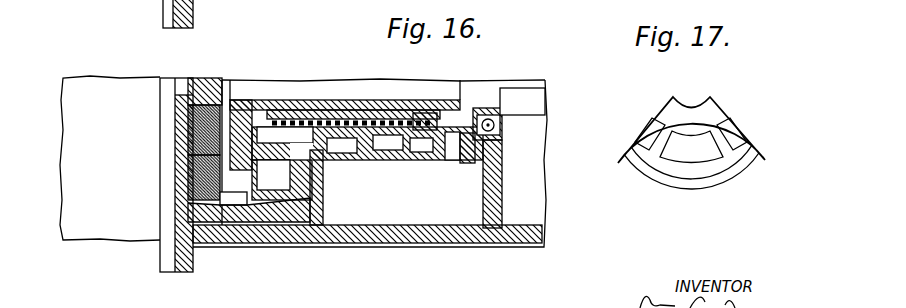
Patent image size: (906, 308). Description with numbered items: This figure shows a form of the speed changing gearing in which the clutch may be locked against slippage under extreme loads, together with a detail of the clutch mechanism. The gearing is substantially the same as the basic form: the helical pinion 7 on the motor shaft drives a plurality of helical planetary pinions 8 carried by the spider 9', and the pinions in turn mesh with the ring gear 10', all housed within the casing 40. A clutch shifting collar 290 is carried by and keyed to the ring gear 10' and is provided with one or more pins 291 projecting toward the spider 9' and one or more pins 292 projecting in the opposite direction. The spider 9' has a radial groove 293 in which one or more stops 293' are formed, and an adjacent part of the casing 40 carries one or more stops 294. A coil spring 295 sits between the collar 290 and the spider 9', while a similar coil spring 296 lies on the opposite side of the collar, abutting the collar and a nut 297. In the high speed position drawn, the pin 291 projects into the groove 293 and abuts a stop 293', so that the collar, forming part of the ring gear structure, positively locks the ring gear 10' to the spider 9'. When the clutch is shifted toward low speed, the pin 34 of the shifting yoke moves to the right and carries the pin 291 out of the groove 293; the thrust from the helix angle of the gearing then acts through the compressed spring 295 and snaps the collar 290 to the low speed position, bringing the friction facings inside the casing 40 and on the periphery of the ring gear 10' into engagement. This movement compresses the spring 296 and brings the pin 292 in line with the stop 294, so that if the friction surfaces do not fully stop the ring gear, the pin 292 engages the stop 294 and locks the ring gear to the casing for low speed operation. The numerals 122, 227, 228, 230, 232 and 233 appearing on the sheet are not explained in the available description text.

In FIG. 16, the helical pinion 7 is at (200, 78).
In FIG. 16, the helical planetary pinions 8 is at (190, 123).
In FIG. 16, the spider 9' is at (163, 181).
In FIG. 16, the ring gear 10' is at (249, 231).
In FIG. 16, the pins 34 is at (345, 160).
In FIG. 16, the casing 40 is at (367, 248).
In FIG. 17, the rim 122 is at (645, 175).
In FIG. 16, the bracket 227 is at (197, 14).
In FIG. 16, the member 228 is at (286, 0).
In FIG. 16, the member 230 is at (553, 0).
In FIG. 16, the member 232 is at (316, 0).
In FIG. 16, the member 233 is at (292, 0).
In FIG. 16, the clutch shifting collar 290 is at (363, 100).
In FIG. 16, the pin 291 is at (320, 168).
In FIG. 16, the pin 292 is at (434, 153).
In FIG. 16, the radial groove 293 is at (215, 78).
In FIG. 17, the radial groove 293 is at (704, 179).
In FIG. 17, the stop 293' is at (713, 125).
In FIG. 16, the stop 294 is at (458, 108).
In FIG. 16, the coil spring 295 is at (313, 100).
In FIG. 16, the coil spring 296 is at (395, 155).
In FIG. 16, the nut 297 is at (425, 113).